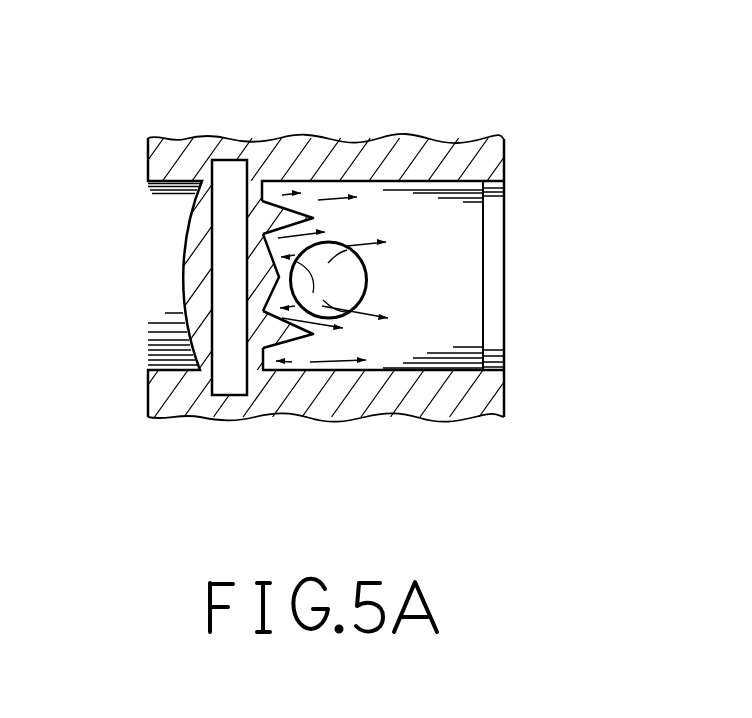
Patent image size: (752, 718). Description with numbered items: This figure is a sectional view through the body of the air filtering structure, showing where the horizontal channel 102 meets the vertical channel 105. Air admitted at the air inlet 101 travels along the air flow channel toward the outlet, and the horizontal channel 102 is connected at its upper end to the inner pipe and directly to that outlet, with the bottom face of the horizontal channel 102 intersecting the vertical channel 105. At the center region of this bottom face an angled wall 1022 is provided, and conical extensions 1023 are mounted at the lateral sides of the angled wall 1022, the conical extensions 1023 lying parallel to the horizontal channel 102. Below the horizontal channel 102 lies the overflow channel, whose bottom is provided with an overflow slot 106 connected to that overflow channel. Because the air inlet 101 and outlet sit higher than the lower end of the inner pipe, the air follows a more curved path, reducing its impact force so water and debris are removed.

The air inlet 101 is at (158, 243).
The horizontal channel 102 is at (460, 308).
The vertical channel 105 is at (353, 280).
The overflow slot 106 is at (225, 177).
The angled wall 1022 is at (268, 268).
The conical extensions 1023 is at (300, 213).